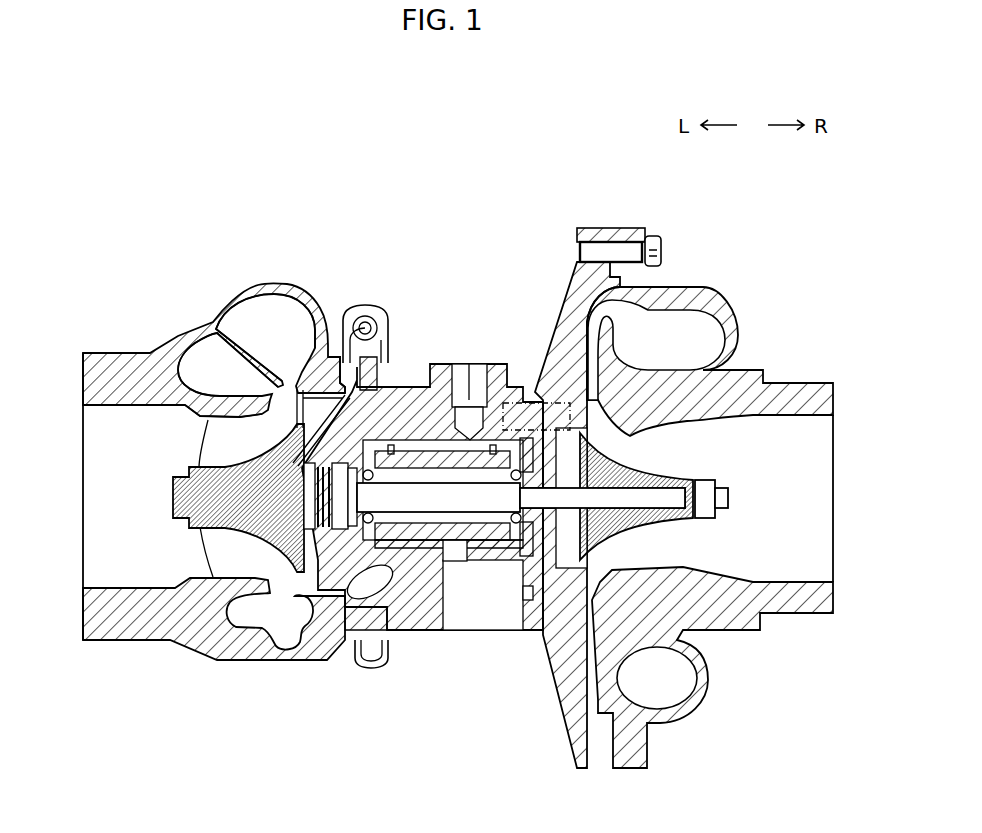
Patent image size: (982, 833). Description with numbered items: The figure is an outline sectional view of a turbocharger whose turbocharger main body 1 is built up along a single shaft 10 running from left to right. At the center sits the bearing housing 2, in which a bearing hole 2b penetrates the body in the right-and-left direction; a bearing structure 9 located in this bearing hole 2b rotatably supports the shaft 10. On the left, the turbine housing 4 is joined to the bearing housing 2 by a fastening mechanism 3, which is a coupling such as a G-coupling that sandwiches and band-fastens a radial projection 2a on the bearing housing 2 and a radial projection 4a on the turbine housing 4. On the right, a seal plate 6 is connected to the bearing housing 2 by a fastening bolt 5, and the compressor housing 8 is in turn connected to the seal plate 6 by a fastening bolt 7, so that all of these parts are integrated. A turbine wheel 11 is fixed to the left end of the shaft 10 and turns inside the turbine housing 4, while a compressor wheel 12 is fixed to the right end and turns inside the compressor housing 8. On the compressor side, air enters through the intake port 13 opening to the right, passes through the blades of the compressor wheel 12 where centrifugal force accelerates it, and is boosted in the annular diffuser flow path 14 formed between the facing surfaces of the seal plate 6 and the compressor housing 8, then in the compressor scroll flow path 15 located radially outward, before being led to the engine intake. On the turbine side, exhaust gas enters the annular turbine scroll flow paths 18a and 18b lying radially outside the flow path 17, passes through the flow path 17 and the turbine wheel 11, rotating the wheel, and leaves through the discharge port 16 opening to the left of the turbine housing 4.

The turbocharger main body 1 is at (240, 165).
The bearing housing 2 is at (490, 365).
The projection 2a is at (372, 662).
The bearing hole 2b is at (447, 577).
The fastening mechanism 3 is at (378, 322).
The turbine housing 4 is at (333, 318).
The projection 4a is at (365, 662).
The fastening bolt 5 is at (524, 400).
The seal plate 6 is at (588, 228).
The fastening bolt 7 is at (652, 236).
The compressor housing 8 is at (738, 306).
The bearing structure 9 is at (479, 565).
The shaft 10 is at (437, 486).
The turbine wheel 11 is at (195, 555).
The compressor wheel 12 is at (775, 418).
The intake port 13 is at (832, 574).
The diffuser flow path 14 is at (590, 347).
The compressor scroll flow path 15 is at (690, 322).
The discharge port 16 is at (117, 405).
The flow path 17 is at (200, 347).
The turbine scroll flow path 18a is at (290, 300).
The turbine scroll flow path 18b is at (212, 340).